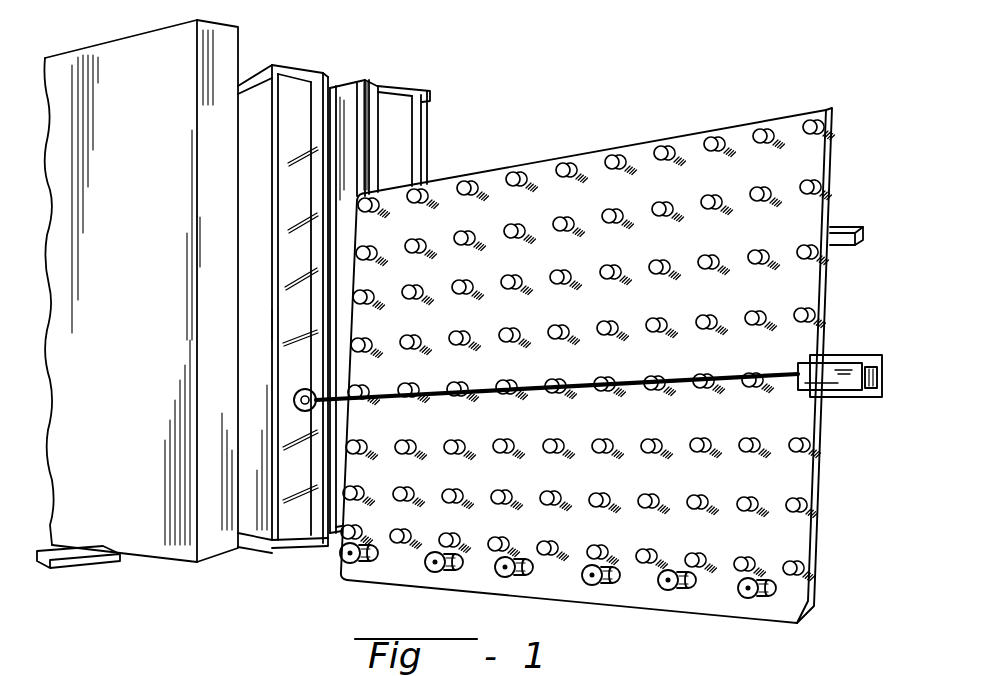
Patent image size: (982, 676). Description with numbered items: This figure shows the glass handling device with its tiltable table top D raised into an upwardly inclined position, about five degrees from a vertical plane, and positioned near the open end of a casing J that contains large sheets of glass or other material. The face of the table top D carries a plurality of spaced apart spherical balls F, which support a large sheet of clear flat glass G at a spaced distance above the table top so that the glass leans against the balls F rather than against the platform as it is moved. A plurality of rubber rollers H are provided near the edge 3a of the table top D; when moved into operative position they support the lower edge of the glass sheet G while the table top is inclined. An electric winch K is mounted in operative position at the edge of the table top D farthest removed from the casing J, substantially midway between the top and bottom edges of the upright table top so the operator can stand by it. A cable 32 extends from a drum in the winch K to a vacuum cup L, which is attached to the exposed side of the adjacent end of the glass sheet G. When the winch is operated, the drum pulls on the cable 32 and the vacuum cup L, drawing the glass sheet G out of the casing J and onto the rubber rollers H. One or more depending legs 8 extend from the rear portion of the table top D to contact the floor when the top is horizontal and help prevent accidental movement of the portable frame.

The open ended casing J is at (293, 63).
The glass sheet G is at (290, 259).
The vacuum cup L is at (300, 386).
The table top D is at (831, 303).
The spherical balls F is at (767, 121).
The rubber rollers H is at (433, 571).
The cable 32 is at (672, 387).
The electric winch K is at (843, 367).
The depending legs 8 is at (838, 227).
The edge of the table top 3a is at (615, 608).